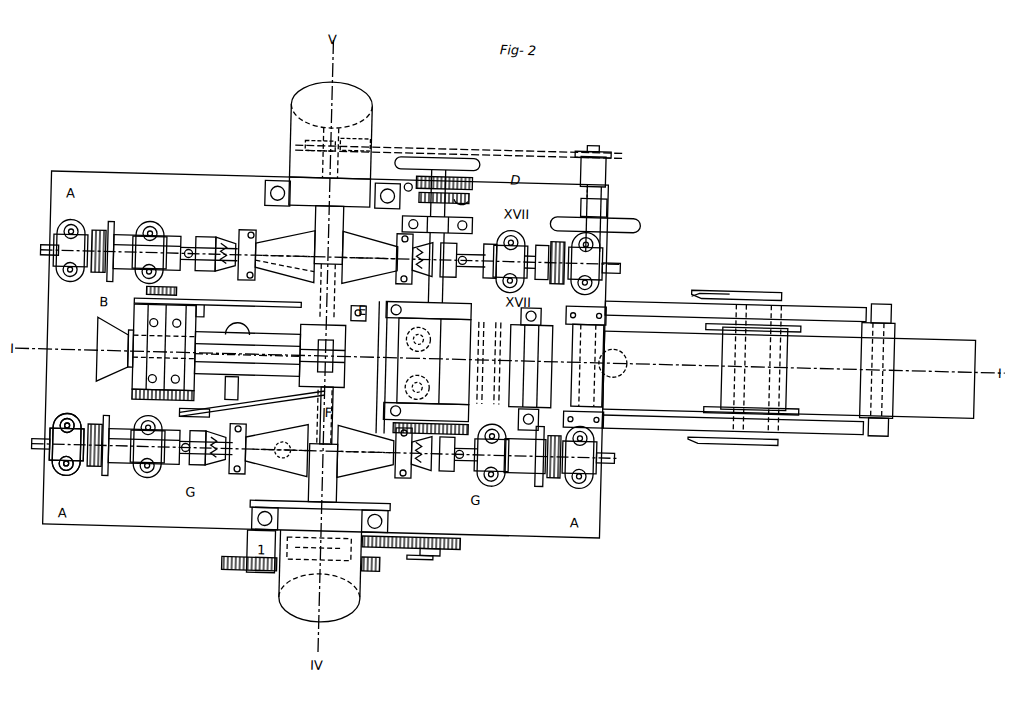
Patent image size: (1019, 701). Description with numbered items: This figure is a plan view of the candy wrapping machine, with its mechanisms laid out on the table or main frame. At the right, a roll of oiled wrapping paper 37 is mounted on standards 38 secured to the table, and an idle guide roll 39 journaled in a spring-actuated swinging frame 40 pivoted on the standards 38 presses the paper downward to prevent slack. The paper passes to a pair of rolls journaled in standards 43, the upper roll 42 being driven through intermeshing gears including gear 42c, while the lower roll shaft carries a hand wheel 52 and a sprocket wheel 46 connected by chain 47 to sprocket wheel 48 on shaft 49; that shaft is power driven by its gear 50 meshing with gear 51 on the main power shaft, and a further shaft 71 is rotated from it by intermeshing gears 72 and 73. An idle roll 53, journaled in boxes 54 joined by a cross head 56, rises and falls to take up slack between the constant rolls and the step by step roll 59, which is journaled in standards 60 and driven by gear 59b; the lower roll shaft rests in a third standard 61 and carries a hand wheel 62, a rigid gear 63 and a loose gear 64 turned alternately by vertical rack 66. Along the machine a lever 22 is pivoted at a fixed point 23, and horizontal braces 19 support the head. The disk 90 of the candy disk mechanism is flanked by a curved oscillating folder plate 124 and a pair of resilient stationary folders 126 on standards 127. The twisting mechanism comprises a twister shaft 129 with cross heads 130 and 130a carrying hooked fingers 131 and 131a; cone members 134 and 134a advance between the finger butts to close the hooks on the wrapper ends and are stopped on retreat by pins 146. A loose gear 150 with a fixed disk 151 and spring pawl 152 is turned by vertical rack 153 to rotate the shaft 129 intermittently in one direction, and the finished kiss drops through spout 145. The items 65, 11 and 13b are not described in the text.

The spout 145 is at (287, 129).
The stationary folders 126 is at (315, 222).
The standards 127 is at (261, 203).
The gear 51 is at (228, 569).
The gear 73 is at (384, 541).
The gear 72 is at (446, 549).
The shaft 71 is at (434, 556).
The gear 50 is at (386, 568).
The chain 47 is at (436, 147).
The sprocket wheel 48 is at (345, 149).
The shaft 49 is at (345, 139).
The hand wheel 62 is at (476, 160).
The vertical rack 66 is at (462, 181).
The loosely mounted gear 64 is at (410, 184).
The rigidly mounted gear 63 is at (421, 195).
The spring 65 is at (459, 194).
The third supporting standard 61 is at (437, 225).
The sprocket wheel 46 is at (596, 148).
The hand wheel 52 is at (627, 213).
The folder plate 124 is at (326, 280).
The intermeshing gear 42c is at (578, 301).
The twister shaft 129 is at (45, 459).
The gear 150 is at (95, 432).
The disk 151 is at (108, 483).
The spring pawl 152 is at (114, 483).
The vertical rack 153 is at (92, 478).
The pins or set screws 146 is at (189, 466).
The cross head 130a is at (225, 476).
The cone member 134a is at (232, 447).
The fingers 131a is at (262, 480).
The fingers 131 is at (381, 479).
The cone member 134 is at (431, 477).
The cross head 130 is at (419, 479).
The funnel 11 is at (115, 349).
The gear 13b is at (134, 402).
The horizontal braces 19 is at (247, 349).
The pivot point 23 is at (228, 399).
The lever 22 is at (251, 406).
The disk 90 is at (320, 411).
The standards 60 is at (447, 302).
The step by step roll 59 is at (434, 361).
The intermeshing gear 59b is at (446, 425).
The cross head 56 is at (524, 342).
The idle roll 53 is at (532, 366).
The roll 42 is at (587, 365).
The boxes 54 is at (549, 413).
The standards 43 is at (605, 306).
The standards 38 is at (831, 295).
The roll of paper 37 is at (919, 328).
The idle guide roll 39 is at (752, 368).
The swinging frame 40 is at (733, 289).